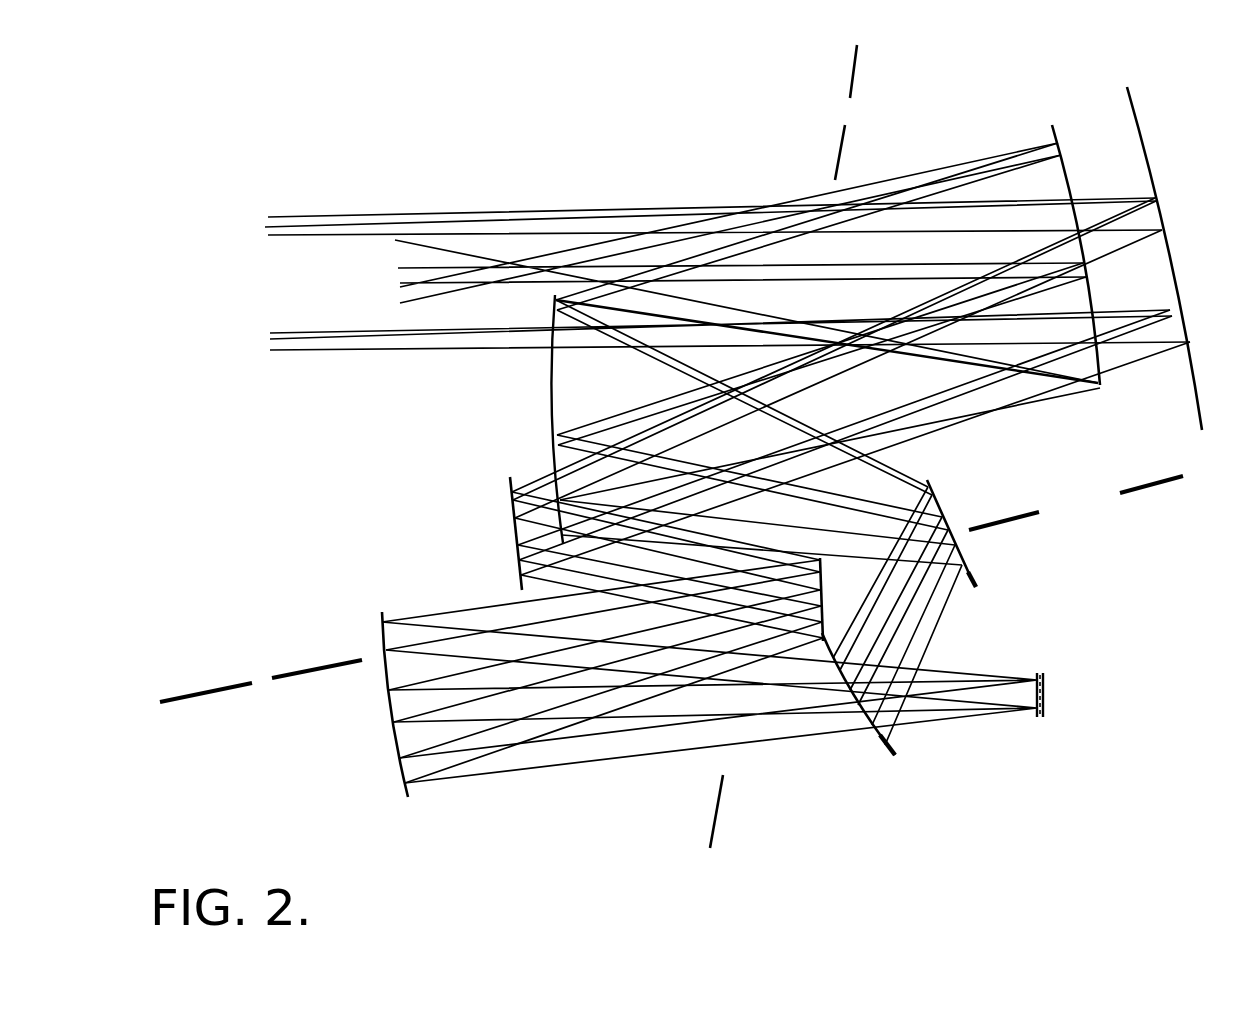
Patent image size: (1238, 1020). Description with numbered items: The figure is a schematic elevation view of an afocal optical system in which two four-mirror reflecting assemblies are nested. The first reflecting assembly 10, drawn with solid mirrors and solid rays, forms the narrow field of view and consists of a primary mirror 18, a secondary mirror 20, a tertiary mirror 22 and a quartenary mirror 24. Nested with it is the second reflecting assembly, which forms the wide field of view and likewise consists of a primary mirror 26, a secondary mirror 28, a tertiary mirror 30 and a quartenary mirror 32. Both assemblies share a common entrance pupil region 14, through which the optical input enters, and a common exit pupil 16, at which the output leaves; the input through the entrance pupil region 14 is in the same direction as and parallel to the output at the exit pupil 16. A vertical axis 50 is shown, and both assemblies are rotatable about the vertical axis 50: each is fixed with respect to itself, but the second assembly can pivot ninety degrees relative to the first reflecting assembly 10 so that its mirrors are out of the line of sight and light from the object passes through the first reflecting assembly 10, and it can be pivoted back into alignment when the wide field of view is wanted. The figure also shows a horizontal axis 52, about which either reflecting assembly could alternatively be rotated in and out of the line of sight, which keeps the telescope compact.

The first reflecting assembly 10 is at (338, 530).
The entrance pupil region 14 is at (300, 260).
The exit pupil 16 is at (1047, 685).
The primary mirror 18 is at (1133, 98).
The secondary mirror 20 is at (512, 540).
The tertiary mirror 22 is at (822, 605).
The quartenary mirror 24 is at (395, 737).
The primary mirror 26 is at (1058, 132).
The secondary mirror 28 is at (550, 388).
The tertiary mirror 30 is at (940, 487).
The quartenary mirror 32 is at (873, 738).
The vertical axis 50 is at (852, 90).
The horizontal axis 52 is at (1172, 478).